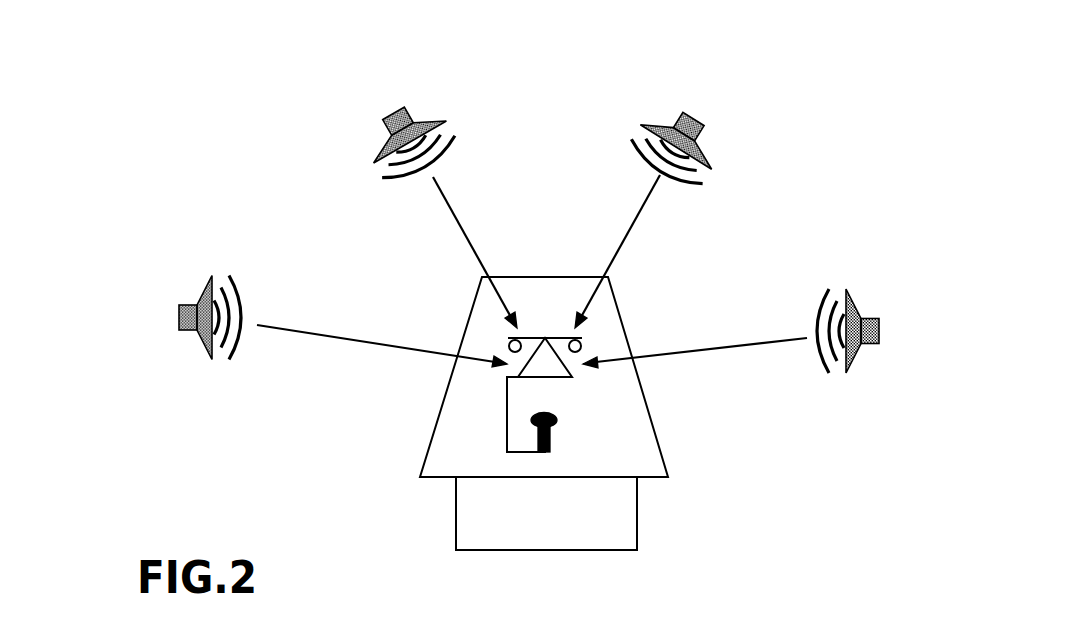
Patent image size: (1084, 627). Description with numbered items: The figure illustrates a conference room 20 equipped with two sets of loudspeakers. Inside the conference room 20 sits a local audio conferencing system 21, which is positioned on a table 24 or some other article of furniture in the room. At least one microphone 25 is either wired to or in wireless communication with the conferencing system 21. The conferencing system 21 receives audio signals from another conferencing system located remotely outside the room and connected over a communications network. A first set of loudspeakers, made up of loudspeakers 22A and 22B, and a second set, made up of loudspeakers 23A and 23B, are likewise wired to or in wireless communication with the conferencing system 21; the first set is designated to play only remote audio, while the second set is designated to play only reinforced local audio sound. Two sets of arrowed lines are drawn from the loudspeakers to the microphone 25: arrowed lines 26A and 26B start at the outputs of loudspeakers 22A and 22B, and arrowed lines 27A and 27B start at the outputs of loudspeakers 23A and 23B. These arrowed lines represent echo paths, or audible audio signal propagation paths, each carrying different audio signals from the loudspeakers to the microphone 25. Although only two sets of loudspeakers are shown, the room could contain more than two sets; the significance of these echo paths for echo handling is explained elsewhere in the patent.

The conference room 20 is at (145, 153).
The local audio conferencing system 21 is at (560, 363).
The loudspeaker of the first set 22A is at (422, 112).
The loudspeaker of the first set 22B is at (700, 150).
The loudspeaker of the second set 23A is at (183, 302).
The loudspeaker of the second set 23B is at (882, 317).
The table 24 is at (546, 513).
The microphone 25 is at (546, 452).
The arrowed line 26A is at (510, 190).
The arrowed line 26B is at (622, 240).
The arrowed line 27A is at (322, 337).
The arrowed line 27B is at (758, 340).